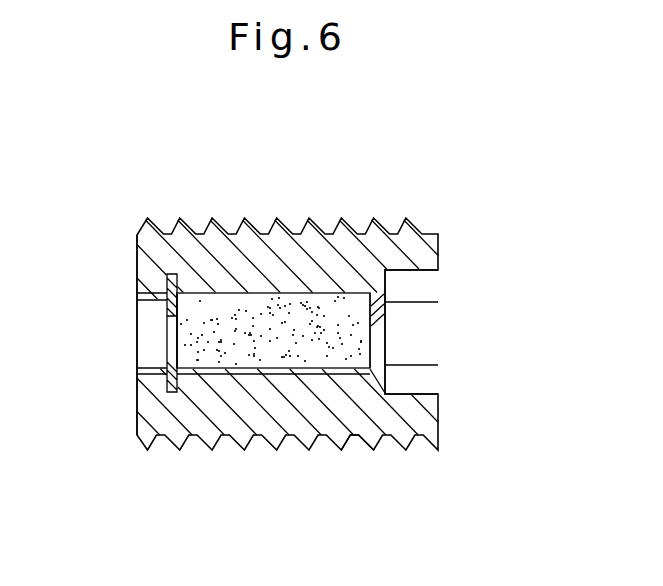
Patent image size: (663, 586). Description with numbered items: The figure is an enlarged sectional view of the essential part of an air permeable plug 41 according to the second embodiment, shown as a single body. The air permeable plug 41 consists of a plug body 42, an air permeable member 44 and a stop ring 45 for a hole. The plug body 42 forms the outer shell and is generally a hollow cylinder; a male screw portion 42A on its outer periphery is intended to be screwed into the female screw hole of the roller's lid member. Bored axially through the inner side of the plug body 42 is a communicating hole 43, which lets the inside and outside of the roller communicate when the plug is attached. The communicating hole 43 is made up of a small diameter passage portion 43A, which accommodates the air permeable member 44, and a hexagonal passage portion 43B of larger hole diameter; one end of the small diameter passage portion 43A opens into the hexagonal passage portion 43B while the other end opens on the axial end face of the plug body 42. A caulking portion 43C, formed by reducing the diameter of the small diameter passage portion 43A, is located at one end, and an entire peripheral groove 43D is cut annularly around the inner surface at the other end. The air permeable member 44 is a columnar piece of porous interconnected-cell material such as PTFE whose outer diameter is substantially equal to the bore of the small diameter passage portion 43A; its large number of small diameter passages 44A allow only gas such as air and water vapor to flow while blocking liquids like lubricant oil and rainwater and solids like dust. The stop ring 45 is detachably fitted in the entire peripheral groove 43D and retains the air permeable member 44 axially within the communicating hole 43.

The air permeable plug 41 is at (287, 205).
The plug body 42 is at (255, 412).
The male screw portion 42A is at (383, 441).
The communicating hole 43 is at (441, 325).
The small diameter passage portion 43A is at (151, 324).
The hexagonal passage portion 43B is at (418, 358).
The caulking portion 43C is at (387, 289).
The entire peripheral groove 43D is at (173, 394).
The air permeable member 44 is at (323, 292).
The small diameter passages 44A is at (196, 340).
The stop ring for a hole 45 is at (170, 287).